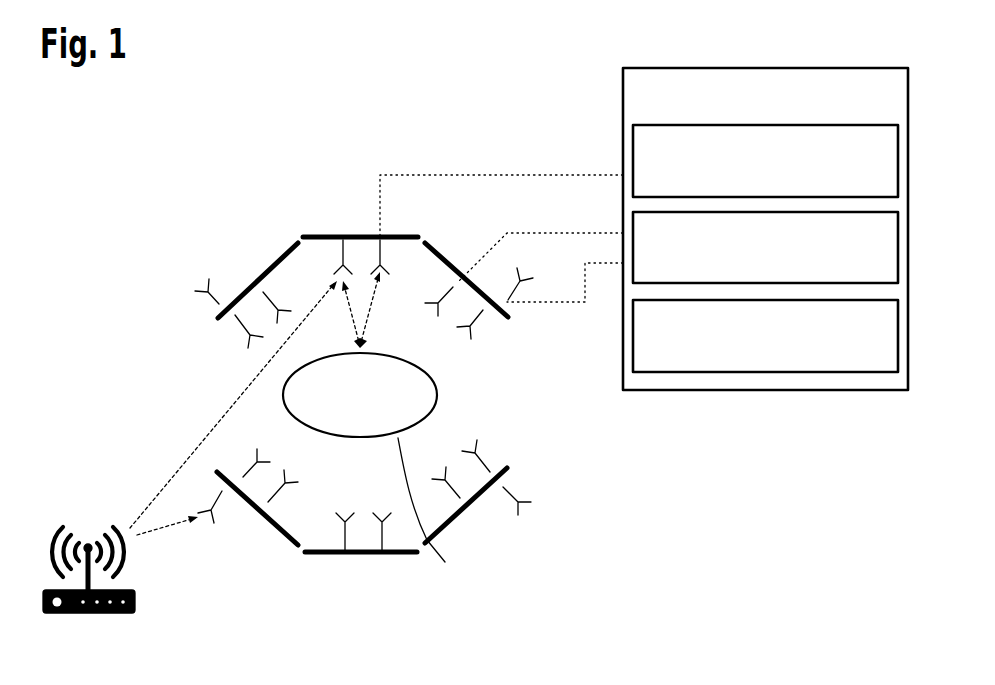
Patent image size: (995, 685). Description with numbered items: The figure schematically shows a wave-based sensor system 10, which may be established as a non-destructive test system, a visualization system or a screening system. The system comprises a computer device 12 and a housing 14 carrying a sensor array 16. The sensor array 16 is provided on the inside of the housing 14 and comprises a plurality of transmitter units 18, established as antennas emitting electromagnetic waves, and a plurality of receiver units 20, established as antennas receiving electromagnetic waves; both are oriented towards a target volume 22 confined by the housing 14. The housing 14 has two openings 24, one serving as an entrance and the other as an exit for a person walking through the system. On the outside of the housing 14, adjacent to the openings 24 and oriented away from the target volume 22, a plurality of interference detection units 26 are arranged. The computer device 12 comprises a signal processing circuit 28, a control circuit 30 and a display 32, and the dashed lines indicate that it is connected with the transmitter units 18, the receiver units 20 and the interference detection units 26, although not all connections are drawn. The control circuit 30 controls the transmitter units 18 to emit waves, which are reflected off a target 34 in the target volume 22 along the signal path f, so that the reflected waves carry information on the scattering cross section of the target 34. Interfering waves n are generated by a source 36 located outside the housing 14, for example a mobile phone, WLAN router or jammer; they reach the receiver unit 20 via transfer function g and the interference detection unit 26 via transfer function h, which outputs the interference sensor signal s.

The wave-based sensor system 10 is at (251, 171).
The computer device 12 is at (627, 93).
The housing 14 is at (263, 272).
The sensor array 16 is at (470, 314).
The transmitter unit 18 is at (345, 556).
The receiver unit 20 is at (383, 556).
The target volume 22 is at (446, 390).
The opening 24 is at (212, 370).
The interference detection unit 26 is at (202, 288).
The signal processing circuit 28 is at (899, 160).
The control circuit 30 is at (899, 247).
The display 32 is at (899, 332).
The target 34 is at (434, 513).
The source 36 is at (136, 608).